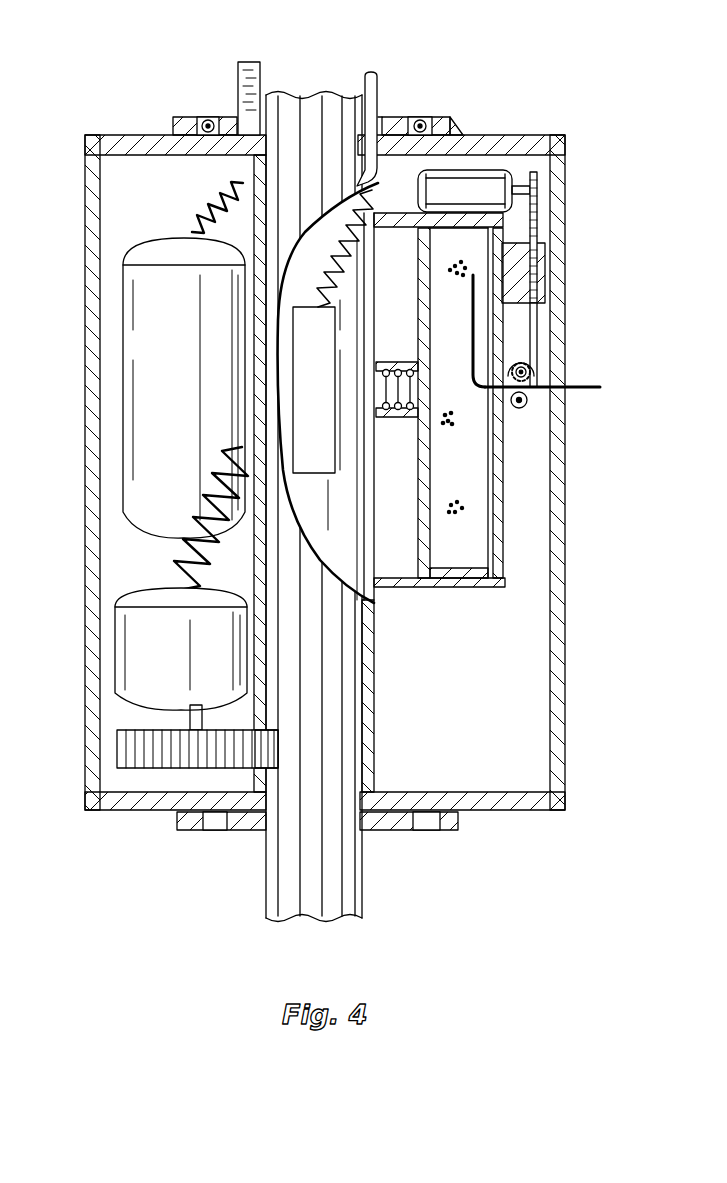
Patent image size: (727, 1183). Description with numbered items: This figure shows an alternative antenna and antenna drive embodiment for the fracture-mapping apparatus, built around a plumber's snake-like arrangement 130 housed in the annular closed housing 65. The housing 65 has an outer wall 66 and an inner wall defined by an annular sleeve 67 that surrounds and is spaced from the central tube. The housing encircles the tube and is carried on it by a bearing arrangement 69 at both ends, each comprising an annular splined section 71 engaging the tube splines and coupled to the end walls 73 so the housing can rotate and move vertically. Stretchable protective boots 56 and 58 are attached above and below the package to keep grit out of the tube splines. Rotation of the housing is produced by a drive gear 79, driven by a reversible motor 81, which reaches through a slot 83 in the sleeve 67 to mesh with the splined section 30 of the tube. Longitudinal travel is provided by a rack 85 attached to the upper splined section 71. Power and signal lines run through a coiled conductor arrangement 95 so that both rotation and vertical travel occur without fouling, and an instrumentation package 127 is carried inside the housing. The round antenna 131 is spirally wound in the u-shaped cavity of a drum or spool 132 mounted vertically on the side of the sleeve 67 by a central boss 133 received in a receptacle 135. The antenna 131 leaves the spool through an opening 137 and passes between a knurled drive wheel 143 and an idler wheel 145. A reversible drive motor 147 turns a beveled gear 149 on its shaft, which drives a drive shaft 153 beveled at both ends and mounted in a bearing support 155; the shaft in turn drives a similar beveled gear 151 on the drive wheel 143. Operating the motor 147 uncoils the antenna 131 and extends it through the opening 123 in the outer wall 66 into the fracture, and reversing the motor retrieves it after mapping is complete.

The splined section 30 is at (280, 853).
The protective boot 56 is at (408, 116).
The protective boot 58 is at (418, 833).
The annular closed housing 65 is at (558, 736).
The outer wall 66 is at (353, 502).
The annular sleeve 67 is at (292, 519).
The bearing arrangement 69 is at (432, 110).
The annular splined section 71 is at (219, 62).
The end wall 73 is at (515, 811).
The drive gear 79 is at (159, 760).
The reversible motor 81 is at (149, 671).
The slot 83 is at (262, 770).
The rack 85 is at (256, 92).
The conductor arrangement 95 is at (374, 70).
The opening 123 is at (560, 392).
The instrumentation package 127 is at (186, 333).
The plumber's snake-like arrangement 130 is at (460, 403).
The round antenna 131 is at (471, 327).
The drum or spool 132 is at (433, 553).
The boss 133 is at (421, 367).
The receptacle 135 is at (398, 370).
The opening 137 is at (463, 430).
The knurled drive wheel 143 is at (531, 372).
The idler wheel 145 is at (526, 405).
The reversible drive motor 147 is at (470, 180).
The beveled gear 149 is at (536, 191).
The beveled gear 151 is at (512, 360).
The drive shaft 153 is at (536, 318).
The bearing support 155 is at (505, 253).